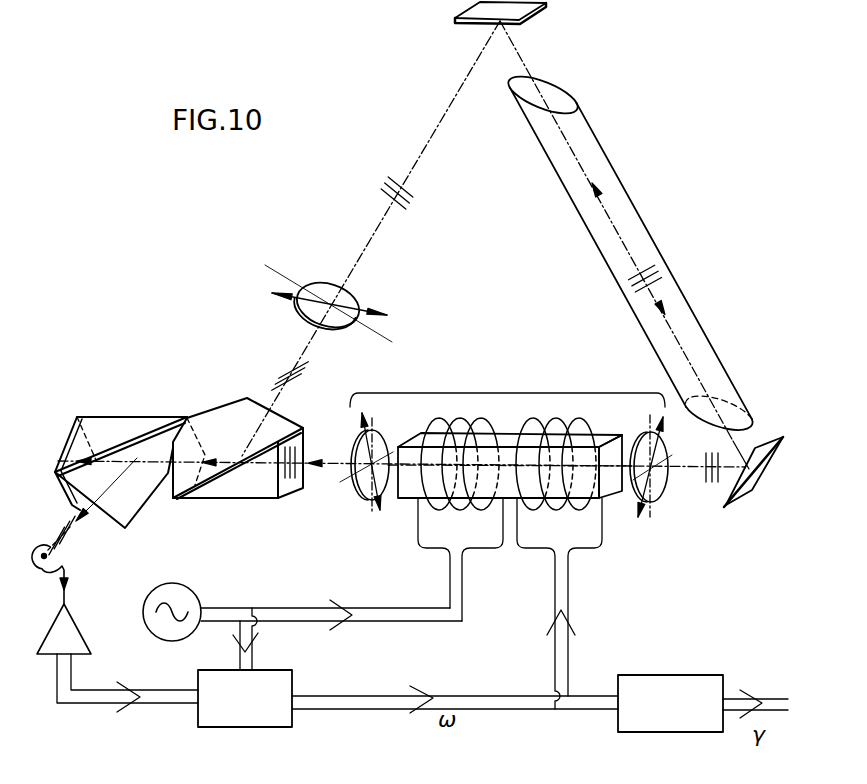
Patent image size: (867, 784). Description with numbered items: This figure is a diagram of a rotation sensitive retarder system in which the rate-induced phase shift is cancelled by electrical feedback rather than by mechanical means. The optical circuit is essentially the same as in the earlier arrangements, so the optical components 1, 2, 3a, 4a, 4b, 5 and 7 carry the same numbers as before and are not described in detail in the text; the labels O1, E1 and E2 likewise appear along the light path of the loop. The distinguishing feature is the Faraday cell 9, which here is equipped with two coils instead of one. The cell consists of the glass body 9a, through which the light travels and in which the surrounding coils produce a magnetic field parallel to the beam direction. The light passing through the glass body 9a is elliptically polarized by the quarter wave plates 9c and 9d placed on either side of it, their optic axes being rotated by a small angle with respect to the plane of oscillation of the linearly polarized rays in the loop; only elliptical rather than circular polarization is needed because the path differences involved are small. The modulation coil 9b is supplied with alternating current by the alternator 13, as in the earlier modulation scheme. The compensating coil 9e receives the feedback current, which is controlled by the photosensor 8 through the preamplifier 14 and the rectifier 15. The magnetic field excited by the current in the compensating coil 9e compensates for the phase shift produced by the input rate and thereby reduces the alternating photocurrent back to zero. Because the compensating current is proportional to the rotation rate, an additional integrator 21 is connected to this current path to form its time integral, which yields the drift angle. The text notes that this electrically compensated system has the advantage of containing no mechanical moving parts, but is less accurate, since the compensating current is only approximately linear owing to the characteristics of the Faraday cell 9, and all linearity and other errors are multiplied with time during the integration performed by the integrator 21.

The beam splitter prism 1 is at (238, 465).
The polarizing prism 2 is at (121, 458).
The reflecting surface 3a is at (55, 471).
The mirror 4a is at (756, 486).
The mirror 4b is at (514, 28).
The laser tube 5 is at (628, 249).
The quarter-wave plate 7 is at (328, 297).
The photosensor 8 is at (41, 574).
The Faraday cell 9 is at (510, 393).
The glass body 9a is at (418, 488).
The modulation coil 9b is at (460, 519).
The quarter wave plate 9c is at (362, 470).
The quarter wave plate 9d is at (657, 476).
The compensating coil 9e is at (559, 563).
The alternator 13 is at (302, 620).
The preamplifier 14 is at (117, 658).
The rectifier 15 is at (408, 698).
The integrator 21 is at (703, 703).
The output beam O1 is at (313, 455).
The input beam E1 is at (289, 365).
The detector beam E2 is at (78, 535).